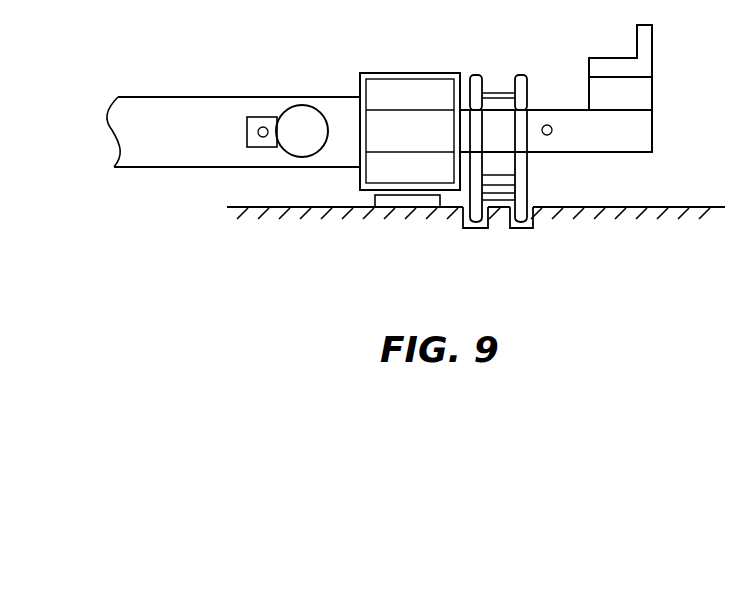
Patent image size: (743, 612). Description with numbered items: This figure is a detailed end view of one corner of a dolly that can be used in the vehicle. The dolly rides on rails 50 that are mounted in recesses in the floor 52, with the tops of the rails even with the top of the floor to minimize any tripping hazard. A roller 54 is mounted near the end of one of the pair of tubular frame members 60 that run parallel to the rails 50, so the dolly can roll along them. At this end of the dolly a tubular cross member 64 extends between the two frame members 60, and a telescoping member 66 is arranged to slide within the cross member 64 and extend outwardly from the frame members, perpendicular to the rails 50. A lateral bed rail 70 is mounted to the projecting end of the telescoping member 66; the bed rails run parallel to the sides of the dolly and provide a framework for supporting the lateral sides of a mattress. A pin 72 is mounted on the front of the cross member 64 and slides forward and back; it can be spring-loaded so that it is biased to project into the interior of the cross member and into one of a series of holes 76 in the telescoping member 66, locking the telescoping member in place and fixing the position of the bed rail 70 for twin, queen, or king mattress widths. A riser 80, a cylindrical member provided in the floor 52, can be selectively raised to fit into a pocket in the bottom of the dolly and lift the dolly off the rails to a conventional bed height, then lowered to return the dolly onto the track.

The rails 50 is at (500, 222).
The floor 52 is at (550, 203).
The rollers 54 is at (496, 90).
The tubular frame members 60 is at (358, 90).
The tubular cross members 64 is at (170, 108).
The telescoping member 66 is at (643, 133).
The lateral bed rail 70 is at (648, 39).
The pin 72 is at (299, 116).
The holes 76 is at (547, 124).
The risers 80 is at (387, 200).